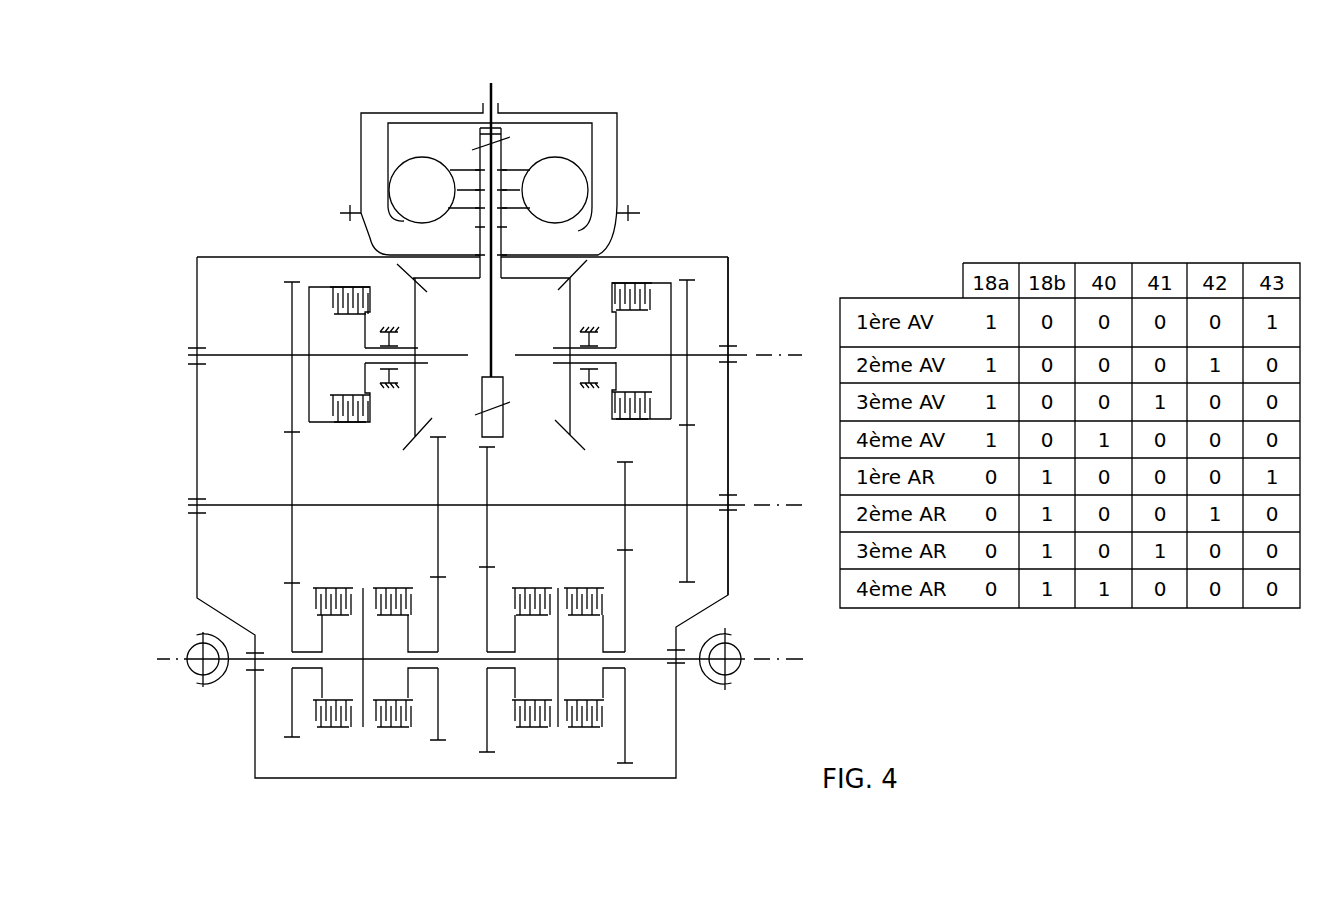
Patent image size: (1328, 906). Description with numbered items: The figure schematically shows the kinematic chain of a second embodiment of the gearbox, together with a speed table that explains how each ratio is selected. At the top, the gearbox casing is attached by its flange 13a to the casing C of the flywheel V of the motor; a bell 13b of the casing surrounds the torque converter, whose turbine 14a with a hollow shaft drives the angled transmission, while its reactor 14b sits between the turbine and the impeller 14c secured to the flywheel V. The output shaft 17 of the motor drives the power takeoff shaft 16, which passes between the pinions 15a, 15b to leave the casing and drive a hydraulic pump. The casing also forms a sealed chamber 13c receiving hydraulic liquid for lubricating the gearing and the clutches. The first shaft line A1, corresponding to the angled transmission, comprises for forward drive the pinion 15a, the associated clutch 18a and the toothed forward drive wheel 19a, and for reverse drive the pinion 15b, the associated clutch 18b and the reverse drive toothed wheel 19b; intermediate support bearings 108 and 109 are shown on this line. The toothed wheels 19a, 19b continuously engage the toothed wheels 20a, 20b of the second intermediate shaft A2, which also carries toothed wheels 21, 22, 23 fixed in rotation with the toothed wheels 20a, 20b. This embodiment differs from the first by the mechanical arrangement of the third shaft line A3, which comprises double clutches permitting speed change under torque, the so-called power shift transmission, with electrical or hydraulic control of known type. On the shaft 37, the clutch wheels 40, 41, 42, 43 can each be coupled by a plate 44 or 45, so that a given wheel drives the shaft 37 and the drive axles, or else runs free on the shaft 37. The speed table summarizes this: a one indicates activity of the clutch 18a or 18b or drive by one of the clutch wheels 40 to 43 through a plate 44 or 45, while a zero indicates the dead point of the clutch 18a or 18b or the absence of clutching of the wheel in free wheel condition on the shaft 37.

The casing C is at (361, 143).
The flywheel V is at (388, 134).
The power takeoff shaft 16 is at (491, 316).
The output shaft 17 is at (485, 103).
The turbine 14a is at (547, 158).
The reactor 14b is at (524, 192).
The impeller 14c is at (578, 231).
The flange 13a is at (633, 225).
The bell 13b is at (617, 254).
The sealed chamber 13c is at (728, 302).
The intermediate support bearing 108 is at (337, 279).
The intermediate support bearing 109 is at (593, 337).
The clutch 18a is at (397, 333).
The clutch 18b is at (645, 279).
The toothed forward drive wheel 19a is at (292, 323).
The reverse drive toothed wheel 19b is at (687, 388).
The toothed wheel 20a is at (292, 445).
The toothed wheel 20b is at (687, 547).
The pinion 15a is at (403, 450).
The pinion 15b is at (570, 443).
The toothed wheel 21 is at (438, 533).
The toothed wheel 22 is at (487, 540).
The toothed wheel 23 is at (627, 530).
The first shaft line A1 is at (745, 350).
The second intermediate shaft A2 is at (746, 505).
The third shaft line A3 is at (748, 658).
The clutch wheel 40 is at (292, 630).
The clutch wheel 41 is at (410, 680).
The clutch wheel 42 is at (488, 632).
The clutch wheel 43 is at (628, 627).
The plate 44 is at (363, 682).
The plate 45 is at (558, 680).
The shaft 37 is at (690, 660).